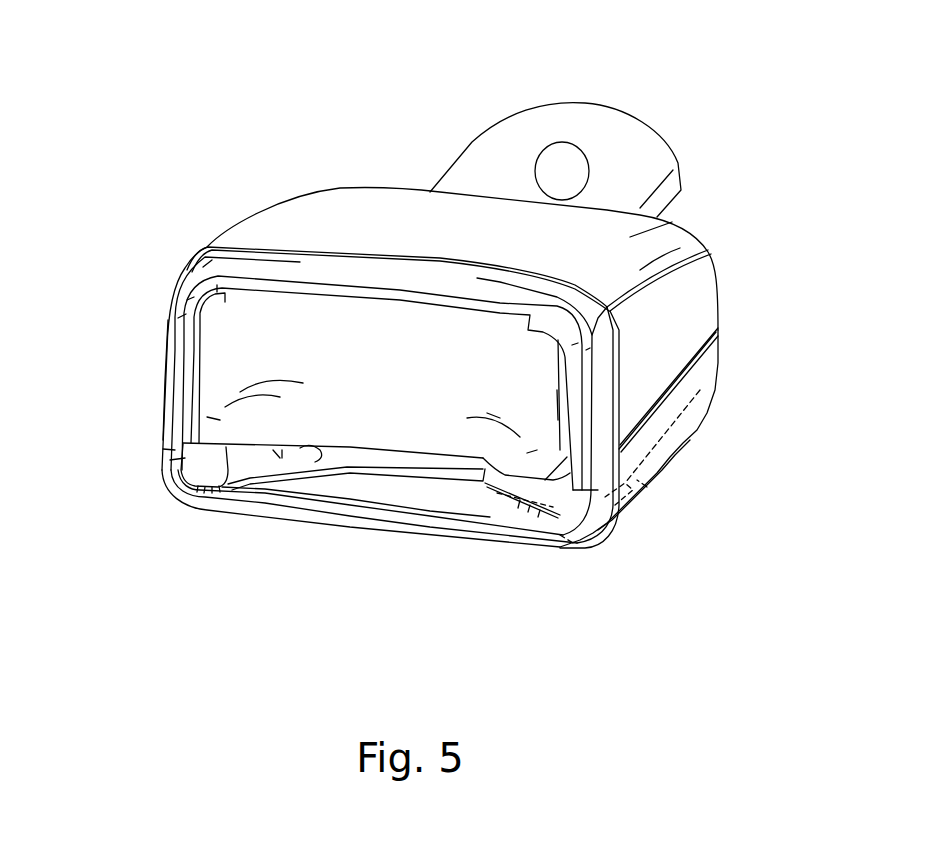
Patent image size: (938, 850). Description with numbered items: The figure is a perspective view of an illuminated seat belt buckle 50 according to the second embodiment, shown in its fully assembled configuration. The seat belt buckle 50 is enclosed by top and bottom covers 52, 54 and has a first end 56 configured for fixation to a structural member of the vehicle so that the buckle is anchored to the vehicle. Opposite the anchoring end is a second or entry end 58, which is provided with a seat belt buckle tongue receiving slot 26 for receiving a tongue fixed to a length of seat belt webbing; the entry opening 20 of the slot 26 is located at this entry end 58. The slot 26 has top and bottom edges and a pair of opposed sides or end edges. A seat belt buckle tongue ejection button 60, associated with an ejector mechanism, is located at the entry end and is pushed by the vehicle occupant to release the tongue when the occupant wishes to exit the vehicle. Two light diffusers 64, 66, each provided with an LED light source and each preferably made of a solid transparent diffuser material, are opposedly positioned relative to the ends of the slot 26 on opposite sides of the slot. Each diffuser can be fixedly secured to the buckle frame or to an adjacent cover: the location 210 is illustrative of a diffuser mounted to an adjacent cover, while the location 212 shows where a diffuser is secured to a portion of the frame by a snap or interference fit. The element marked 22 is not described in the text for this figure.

The seat belt buckle 50 is at (462, 213).
The first end 56 is at (598, 132).
The top cover 52 is at (665, 293).
The second or entry end 58 is at (162, 375).
The seat belt buckle tongue ejection button 60 is at (305, 382).
The light diffuser 64 is at (218, 497).
The light diffuser 66 is at (522, 510).
The entry opening 20 is at (347, 468).
The seat belt buckle tongue receiving slot 26 is at (368, 473).
The bottom cover 54 is at (697, 430).
The latch member 22 is at (685, 415).
The diffuser mounting location to cover 210 is at (647, 487).
The diffuser mounting location to frame 212 is at (636, 495).